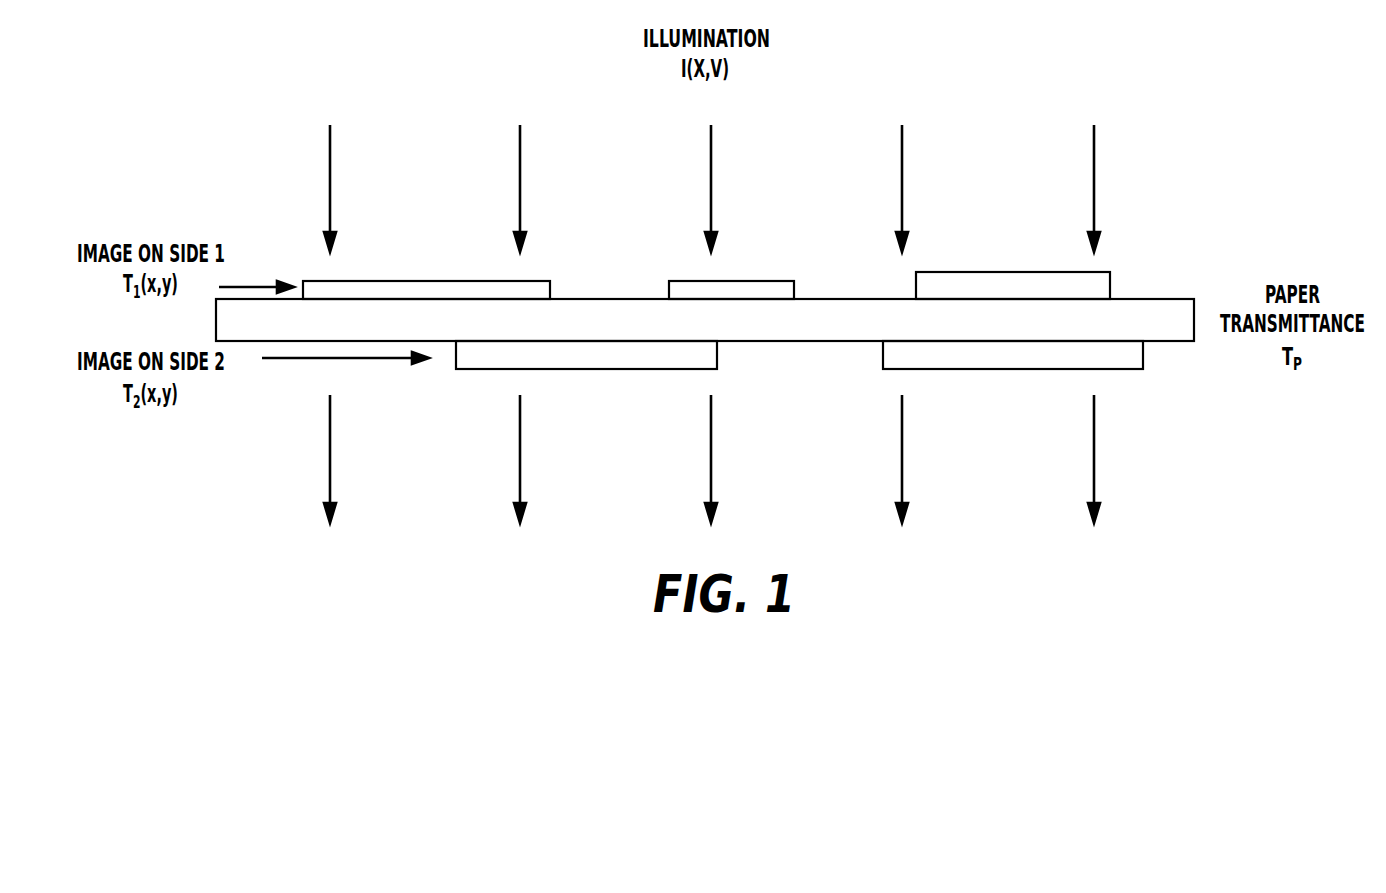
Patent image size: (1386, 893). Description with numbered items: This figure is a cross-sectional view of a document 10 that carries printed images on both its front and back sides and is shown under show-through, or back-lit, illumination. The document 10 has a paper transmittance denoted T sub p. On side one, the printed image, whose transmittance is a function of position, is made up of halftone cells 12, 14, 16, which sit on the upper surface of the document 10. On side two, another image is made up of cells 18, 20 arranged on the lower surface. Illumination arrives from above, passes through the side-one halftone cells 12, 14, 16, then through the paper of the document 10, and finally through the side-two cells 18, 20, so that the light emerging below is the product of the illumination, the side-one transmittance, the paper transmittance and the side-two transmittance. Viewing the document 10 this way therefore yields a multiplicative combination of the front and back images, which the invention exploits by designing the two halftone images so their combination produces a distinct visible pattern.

The document 10 is at (1152, 307).
The halftone cell 12 is at (538, 281).
The halftone cell 14 is at (738, 282).
The halftone cell 16 is at (973, 283).
The cell 18 is at (712, 356).
The cell 20 is at (1133, 355).